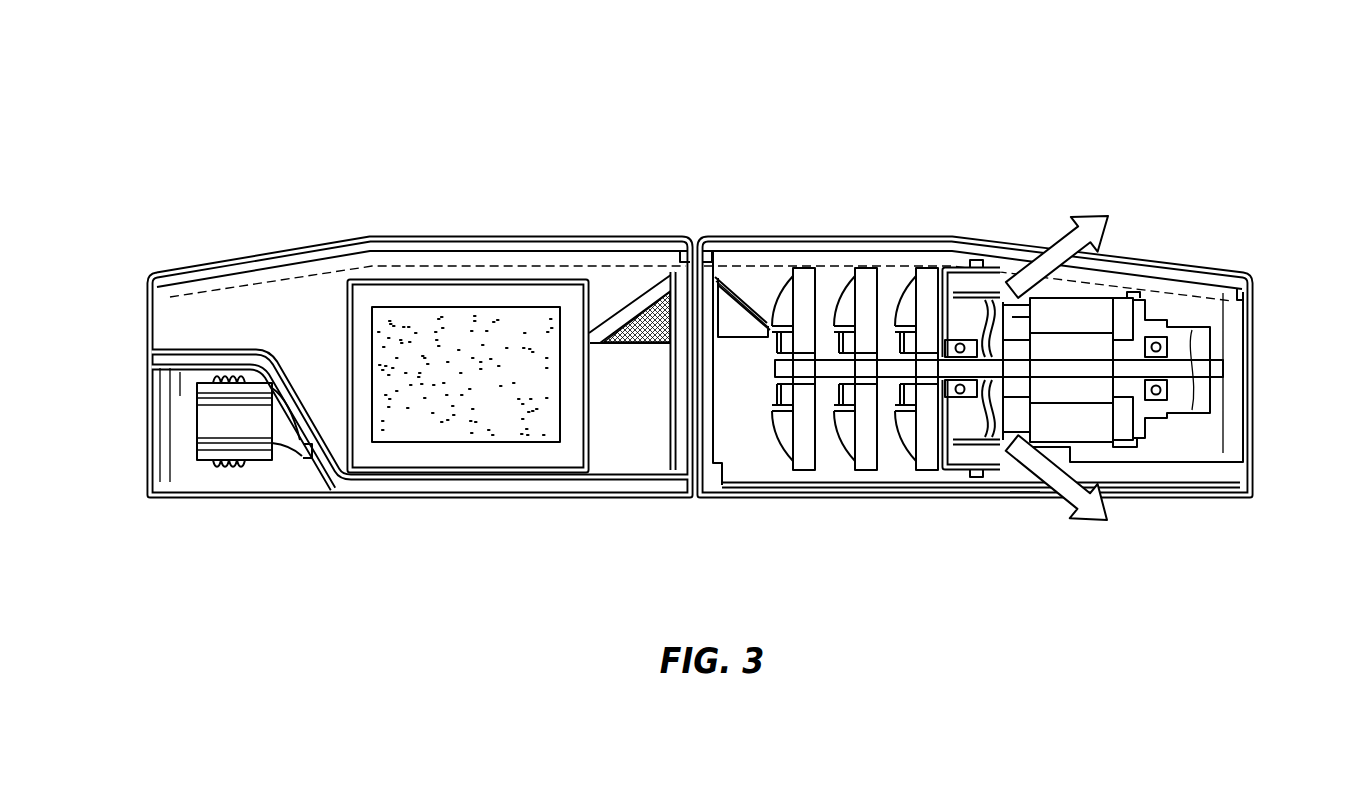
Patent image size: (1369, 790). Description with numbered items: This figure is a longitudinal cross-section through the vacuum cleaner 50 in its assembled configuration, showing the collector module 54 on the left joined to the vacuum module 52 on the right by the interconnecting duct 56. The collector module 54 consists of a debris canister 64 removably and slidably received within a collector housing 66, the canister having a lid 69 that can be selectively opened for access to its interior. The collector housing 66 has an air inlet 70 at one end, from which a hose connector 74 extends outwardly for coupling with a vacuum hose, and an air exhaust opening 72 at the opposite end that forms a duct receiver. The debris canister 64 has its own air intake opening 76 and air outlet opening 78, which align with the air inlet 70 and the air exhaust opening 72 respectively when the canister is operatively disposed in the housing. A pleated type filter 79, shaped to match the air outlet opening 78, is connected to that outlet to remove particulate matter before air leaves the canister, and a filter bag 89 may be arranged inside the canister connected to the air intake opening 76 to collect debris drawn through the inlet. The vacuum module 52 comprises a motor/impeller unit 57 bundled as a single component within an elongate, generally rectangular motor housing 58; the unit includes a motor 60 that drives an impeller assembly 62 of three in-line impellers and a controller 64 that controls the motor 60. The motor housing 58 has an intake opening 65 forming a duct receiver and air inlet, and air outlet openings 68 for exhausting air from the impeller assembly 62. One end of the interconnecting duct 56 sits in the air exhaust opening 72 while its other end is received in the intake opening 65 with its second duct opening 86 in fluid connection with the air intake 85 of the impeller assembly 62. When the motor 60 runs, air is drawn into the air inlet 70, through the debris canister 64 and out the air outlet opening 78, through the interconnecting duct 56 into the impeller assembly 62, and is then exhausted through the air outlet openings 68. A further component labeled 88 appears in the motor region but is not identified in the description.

The vacuum cleaner 50 is at (166, 114).
The vacuum module 52 is at (1260, 268).
The collector module 54 is at (146, 268).
The interconnecting duct 56 is at (728, 436).
The motor/impeller unit 57 is at (1182, 319).
The motor housing 58 is at (994, 497).
The motor 60 is at (1089, 313).
The impeller assembly 62 is at (859, 277).
The debris canister 64 is at (194, 270).
The intake opening 65 is at (763, 300).
The collector housing 66 is at (240, 497).
The air outlet openings 68 is at (1038, 244).
The lid 69 is at (393, 238).
The air inlet 70 is at (265, 420).
The air exhaust opening 72 is at (672, 266).
The hose connector 74 is at (208, 460).
The air intake opening 76 is at (288, 372).
The air outlet opening 78 is at (592, 332).
The pleated type filter 79 is at (637, 320).
The air intake 85 is at (765, 402).
The second duct opening 86 is at (731, 318).
The motor 88 is at (1096, 350).
The filter bag 89 is at (288, 478).